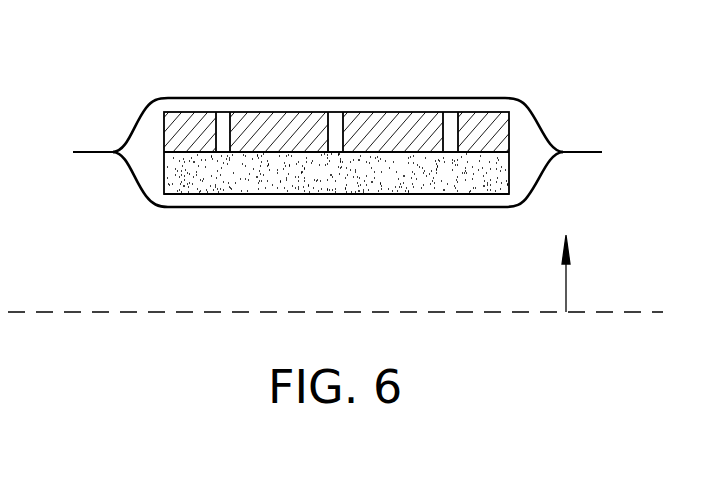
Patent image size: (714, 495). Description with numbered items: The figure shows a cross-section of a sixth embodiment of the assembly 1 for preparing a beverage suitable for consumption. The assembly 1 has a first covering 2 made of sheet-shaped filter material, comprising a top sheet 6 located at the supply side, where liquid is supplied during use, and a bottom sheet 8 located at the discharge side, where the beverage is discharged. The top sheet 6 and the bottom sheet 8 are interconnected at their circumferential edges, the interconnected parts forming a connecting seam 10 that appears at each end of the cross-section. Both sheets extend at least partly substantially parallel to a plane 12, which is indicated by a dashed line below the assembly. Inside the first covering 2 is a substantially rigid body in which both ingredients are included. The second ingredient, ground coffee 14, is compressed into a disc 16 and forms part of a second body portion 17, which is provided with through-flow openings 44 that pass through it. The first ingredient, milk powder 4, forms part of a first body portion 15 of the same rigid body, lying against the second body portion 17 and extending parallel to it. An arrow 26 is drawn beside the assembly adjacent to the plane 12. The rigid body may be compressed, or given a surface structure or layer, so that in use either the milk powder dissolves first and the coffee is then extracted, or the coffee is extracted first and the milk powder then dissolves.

The assembly 1 is at (682, 277).
The first covering 2 is at (310, 125).
The milk powder 4 is at (405, 172).
The top sheet 6 is at (242, 97).
The bottom sheet 8 is at (130, 177).
The connecting seam 10 is at (87, 150).
The plane 12 is at (465, 313).
The ground coffee 14 is at (193, 119).
The first body portion 15 is at (478, 182).
The disc 16 is at (288, 112).
The second body portion 17 is at (480, 128).
The magnetization direction arrow 26 is at (568, 285).
The through-flow openings 44 is at (223, 120).